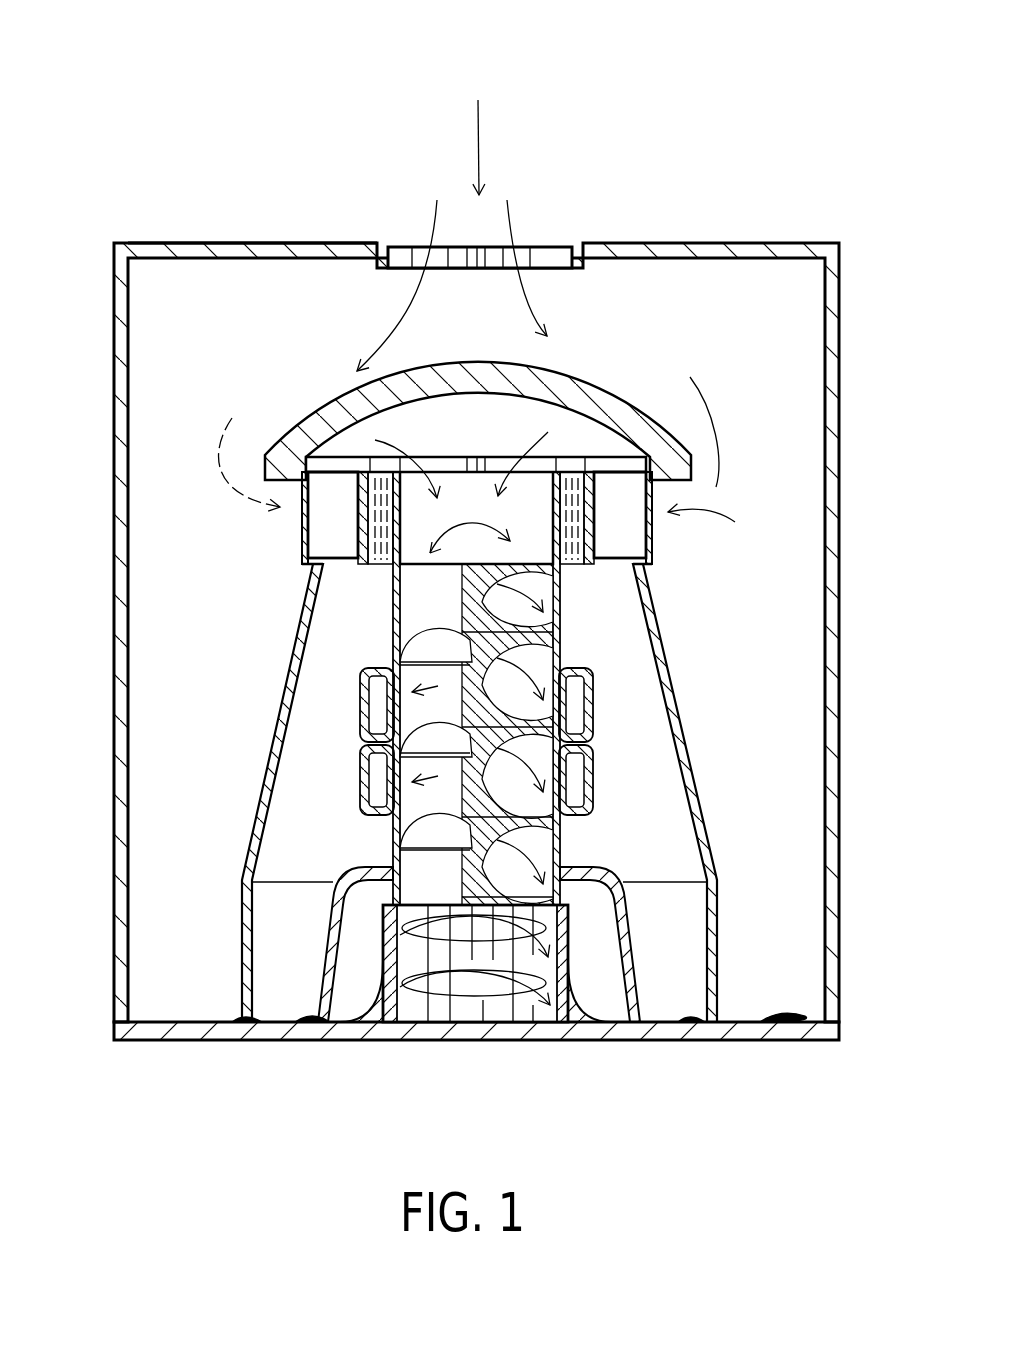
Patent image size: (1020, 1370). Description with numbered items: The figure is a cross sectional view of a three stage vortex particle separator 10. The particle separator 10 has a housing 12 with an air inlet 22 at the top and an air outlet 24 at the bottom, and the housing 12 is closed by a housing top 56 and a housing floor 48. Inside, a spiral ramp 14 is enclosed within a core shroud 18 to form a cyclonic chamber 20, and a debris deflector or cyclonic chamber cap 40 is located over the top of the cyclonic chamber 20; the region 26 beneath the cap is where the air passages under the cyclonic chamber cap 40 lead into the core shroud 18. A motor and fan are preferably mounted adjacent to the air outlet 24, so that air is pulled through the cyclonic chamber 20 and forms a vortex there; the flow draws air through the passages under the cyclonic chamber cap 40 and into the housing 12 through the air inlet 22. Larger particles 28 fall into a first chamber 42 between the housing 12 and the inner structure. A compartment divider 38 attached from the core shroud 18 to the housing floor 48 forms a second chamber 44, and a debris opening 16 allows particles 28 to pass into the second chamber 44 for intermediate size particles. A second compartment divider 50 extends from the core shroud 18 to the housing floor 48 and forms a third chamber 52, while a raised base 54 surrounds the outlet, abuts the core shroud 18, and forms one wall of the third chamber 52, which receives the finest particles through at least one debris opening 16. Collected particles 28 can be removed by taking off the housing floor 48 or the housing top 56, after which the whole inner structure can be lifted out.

The particle separator 10 is at (781, 124).
The housing 12 is at (839, 580).
The spiral ramp 14 is at (523, 592).
The debris opening 16 is at (360, 707).
The core shroud 18 is at (393, 610).
The cyclonic chamber 20 is at (477, 1045).
The air inlet 22 is at (407, 250).
The air outlet 24 is at (537, 1022).
The upper distribution chamber 26 is at (530, 500).
The particles 28 is at (810, 1015).
The compartment divider 38 is at (362, 760).
The cyclonic chamber cap 40 is at (318, 418).
The first chamber 42 is at (797, 865).
The second chamber 44 is at (282, 828).
The housing floor 48 is at (152, 1018).
The second compartment divider 50 is at (330, 955).
The third chamber 52 is at (593, 947).
The base 54 is at (616, 1023).
The housing top 56 is at (233, 247).